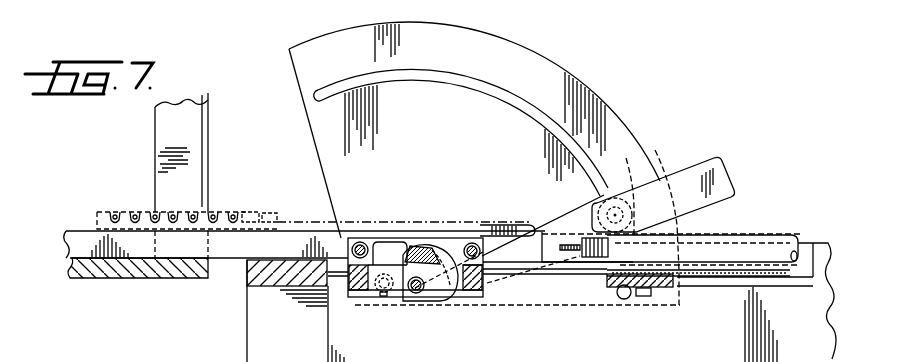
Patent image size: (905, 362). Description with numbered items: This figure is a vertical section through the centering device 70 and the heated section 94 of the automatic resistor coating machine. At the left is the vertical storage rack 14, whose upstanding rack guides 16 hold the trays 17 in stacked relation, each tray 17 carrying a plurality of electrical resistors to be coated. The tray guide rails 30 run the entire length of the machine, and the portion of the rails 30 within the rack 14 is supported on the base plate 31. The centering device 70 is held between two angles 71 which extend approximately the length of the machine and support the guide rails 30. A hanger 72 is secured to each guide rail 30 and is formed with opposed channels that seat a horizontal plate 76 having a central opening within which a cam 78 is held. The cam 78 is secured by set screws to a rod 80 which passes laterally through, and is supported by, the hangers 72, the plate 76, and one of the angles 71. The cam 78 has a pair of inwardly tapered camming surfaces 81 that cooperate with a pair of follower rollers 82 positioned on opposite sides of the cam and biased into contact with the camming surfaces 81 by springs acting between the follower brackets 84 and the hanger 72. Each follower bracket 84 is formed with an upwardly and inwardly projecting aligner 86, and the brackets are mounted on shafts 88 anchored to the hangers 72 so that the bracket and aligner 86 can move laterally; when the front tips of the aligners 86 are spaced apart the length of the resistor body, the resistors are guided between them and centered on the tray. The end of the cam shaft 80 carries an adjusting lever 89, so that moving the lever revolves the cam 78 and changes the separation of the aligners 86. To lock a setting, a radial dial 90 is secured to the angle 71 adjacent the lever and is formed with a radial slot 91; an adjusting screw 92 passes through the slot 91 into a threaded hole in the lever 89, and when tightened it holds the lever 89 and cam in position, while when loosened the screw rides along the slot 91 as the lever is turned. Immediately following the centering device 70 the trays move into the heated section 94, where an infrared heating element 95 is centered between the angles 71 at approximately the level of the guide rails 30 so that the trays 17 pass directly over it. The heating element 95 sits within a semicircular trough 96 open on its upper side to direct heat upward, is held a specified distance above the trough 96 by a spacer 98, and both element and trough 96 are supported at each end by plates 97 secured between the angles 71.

The vertical storage rack 14 is at (186, 187).
The rack guide 16 is at (192, 143).
The tray 17 is at (118, 207).
The tray guide rail 30 is at (75, 248).
The base plate 31 is at (130, 277).
The centering device 70 is at (690, 126).
The angle 71 is at (797, 346).
The hanger 72 is at (390, 297).
The horizontal plate 76 is at (358, 293).
The cam 78 is at (480, 280).
The rod 80 is at (420, 294).
The camming surface 81 is at (443, 295).
The follower roller 82 is at (432, 247).
The follower bracket 84 is at (396, 238).
The aligner 86 is at (517, 232).
The shaft 88 is at (360, 243).
The adjusting lever 89 is at (722, 170).
The radial dial 90 is at (550, 63).
The radial slot 91 is at (530, 109).
The adjusting screw 92 is at (615, 193).
The heated section 94 is at (779, 230).
The infrared heating element 95 is at (751, 252).
The semicircular trough 96 is at (805, 244).
The plate 97 is at (673, 288).
The spacer 98 is at (596, 268).